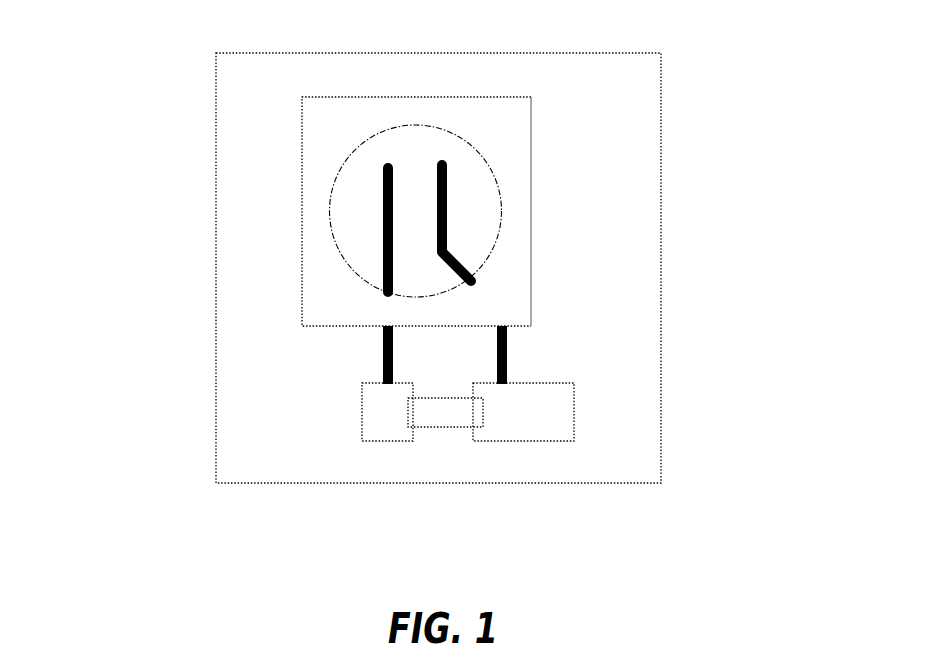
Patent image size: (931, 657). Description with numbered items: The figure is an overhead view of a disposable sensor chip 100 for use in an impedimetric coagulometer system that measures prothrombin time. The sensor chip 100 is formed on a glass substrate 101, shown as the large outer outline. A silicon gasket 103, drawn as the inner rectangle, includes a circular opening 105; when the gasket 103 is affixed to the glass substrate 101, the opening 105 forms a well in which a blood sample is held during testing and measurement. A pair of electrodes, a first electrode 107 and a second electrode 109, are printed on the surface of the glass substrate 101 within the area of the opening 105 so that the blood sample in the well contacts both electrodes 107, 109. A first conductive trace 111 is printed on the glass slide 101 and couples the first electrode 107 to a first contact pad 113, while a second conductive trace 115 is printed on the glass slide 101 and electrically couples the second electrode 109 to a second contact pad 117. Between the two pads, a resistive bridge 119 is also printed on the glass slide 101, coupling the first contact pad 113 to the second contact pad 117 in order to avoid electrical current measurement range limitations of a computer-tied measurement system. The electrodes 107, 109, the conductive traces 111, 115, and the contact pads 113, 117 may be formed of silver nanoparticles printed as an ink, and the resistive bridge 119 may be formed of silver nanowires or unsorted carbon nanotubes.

The sensor chip 100 is at (110, 145).
The glass substrate 101 is at (262, 487).
The silicon gasket 103 is at (515, 122).
The opening 105 is at (411, 145).
The first electrode 107 is at (392, 198).
The second electrode 109 is at (446, 199).
The first conductive trace 111 is at (382, 345).
The first contact pad 113 is at (370, 433).
The second conductive trace 115 is at (507, 354).
The second contact pad 117 is at (537, 435).
The resistive bridge 119 is at (447, 424).